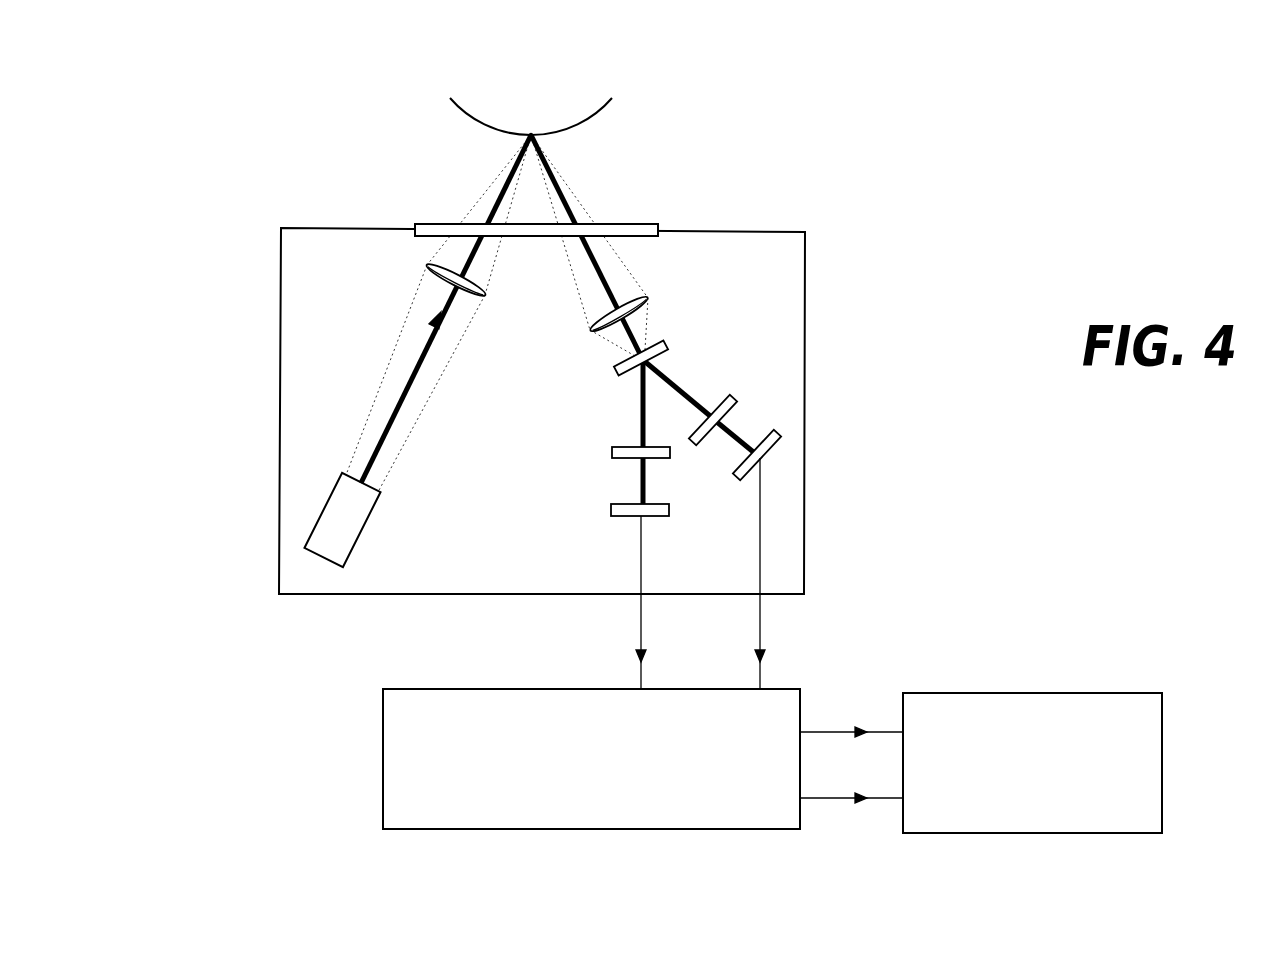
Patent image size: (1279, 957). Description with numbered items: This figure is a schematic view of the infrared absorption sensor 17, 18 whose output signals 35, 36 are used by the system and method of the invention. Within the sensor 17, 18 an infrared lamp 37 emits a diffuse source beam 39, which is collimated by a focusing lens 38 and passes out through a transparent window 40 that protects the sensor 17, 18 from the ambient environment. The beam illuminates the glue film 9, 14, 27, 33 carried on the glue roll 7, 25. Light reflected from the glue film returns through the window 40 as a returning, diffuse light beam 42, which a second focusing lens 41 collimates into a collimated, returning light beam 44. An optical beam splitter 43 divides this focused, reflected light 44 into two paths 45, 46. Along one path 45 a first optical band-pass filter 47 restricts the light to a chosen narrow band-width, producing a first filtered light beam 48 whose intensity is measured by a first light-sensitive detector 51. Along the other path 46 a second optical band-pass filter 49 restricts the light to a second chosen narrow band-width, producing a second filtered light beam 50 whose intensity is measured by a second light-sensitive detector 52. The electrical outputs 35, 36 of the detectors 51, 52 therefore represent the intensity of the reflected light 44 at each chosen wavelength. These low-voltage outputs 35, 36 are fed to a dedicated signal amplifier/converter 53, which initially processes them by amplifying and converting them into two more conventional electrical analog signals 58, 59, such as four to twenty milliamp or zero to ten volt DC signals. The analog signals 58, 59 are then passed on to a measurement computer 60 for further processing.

The glue roll 7 is at (590, 78).
The glue roll 25 is at (563, 120).
The glue film 9 is at (389, 119).
The glue film 14 is at (389, 119).
The glue film 27 is at (389, 119).
The glue film 33 is at (477, 123).
The infrared absorption sensor 17 is at (539, 458).
The infrared absorption sensor 18 is at (380, 596).
The output signal 35 is at (640, 617).
The output signal 36 is at (762, 620).
The infrared lamp 37 is at (313, 533).
The focusing lens 38 is at (427, 268).
The diffuse source beam 39 is at (393, 405).
The transparent window 40 is at (432, 223).
The second focusing lens 41 is at (650, 308).
The returning diffuse light beam 42 is at (555, 173).
The optical beam splitter 43 is at (690, 349).
The collimated returning light beam 44 is at (668, 350).
The first path 45 is at (642, 410).
The second path 46 is at (685, 392).
The first optical band-pass filter 47 is at (612, 452).
The first filtered light beam 48 is at (643, 478).
The second optical band-pass filter 49 is at (738, 402).
The second filtered light beam 50 is at (738, 428).
The first light-sensitive detector 51 is at (627, 517).
The second light-sensitive detector 52 is at (778, 452).
The dedicated signal amplifier/converter 53 is at (591, 759).
The electrical analog signal 58 is at (837, 798).
The electrical analog signal 59 is at (890, 730).
The measurement computer 60 is at (1032, 763).